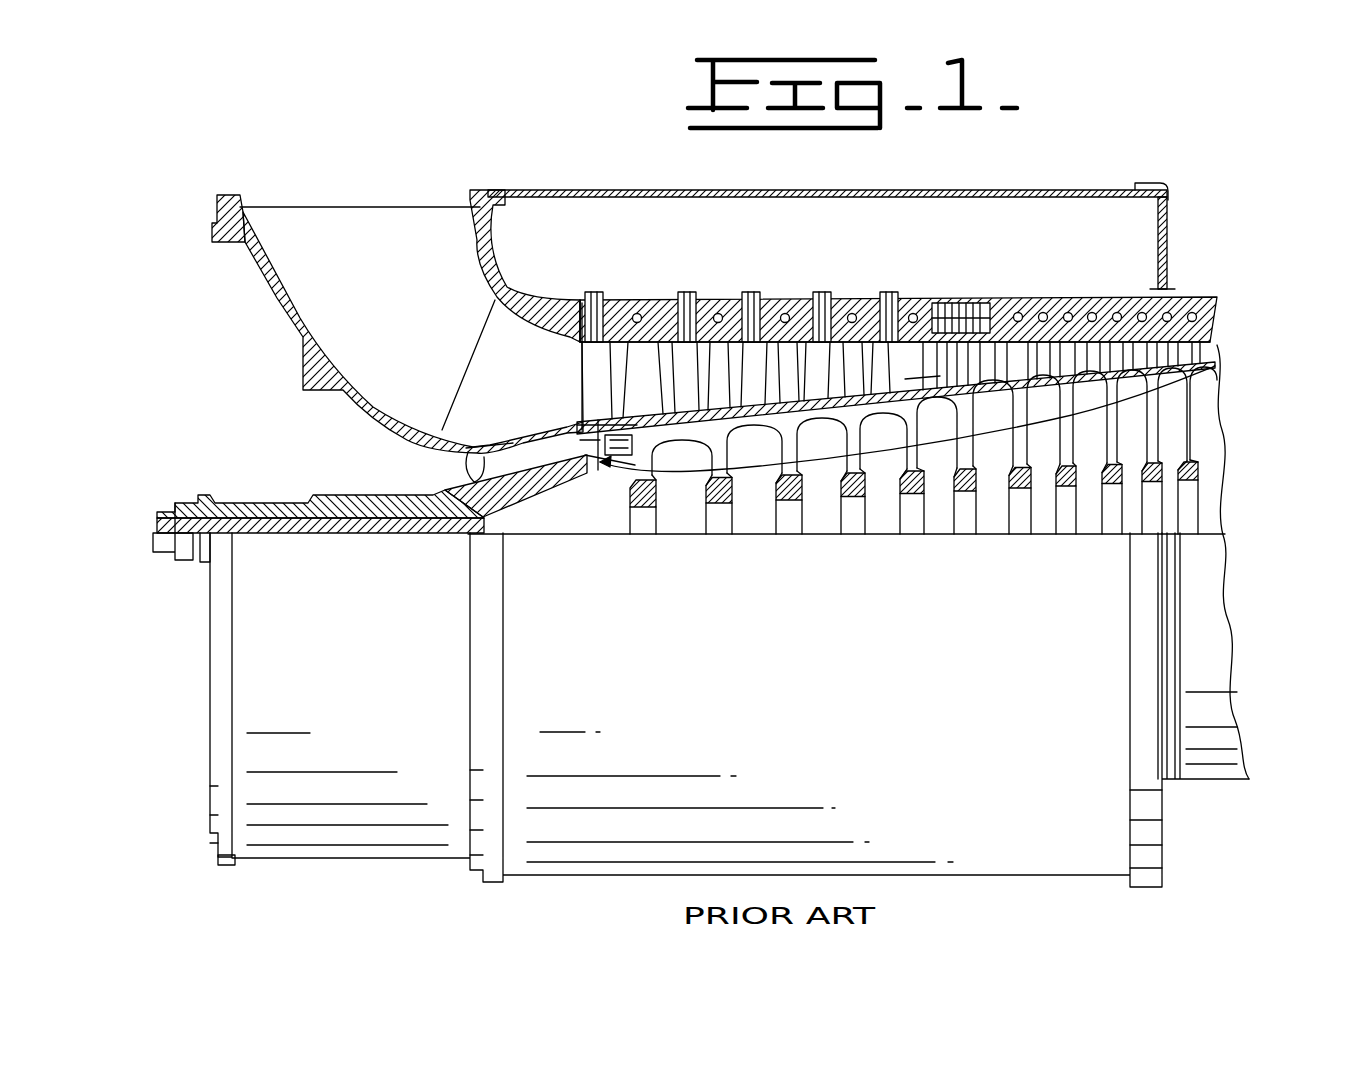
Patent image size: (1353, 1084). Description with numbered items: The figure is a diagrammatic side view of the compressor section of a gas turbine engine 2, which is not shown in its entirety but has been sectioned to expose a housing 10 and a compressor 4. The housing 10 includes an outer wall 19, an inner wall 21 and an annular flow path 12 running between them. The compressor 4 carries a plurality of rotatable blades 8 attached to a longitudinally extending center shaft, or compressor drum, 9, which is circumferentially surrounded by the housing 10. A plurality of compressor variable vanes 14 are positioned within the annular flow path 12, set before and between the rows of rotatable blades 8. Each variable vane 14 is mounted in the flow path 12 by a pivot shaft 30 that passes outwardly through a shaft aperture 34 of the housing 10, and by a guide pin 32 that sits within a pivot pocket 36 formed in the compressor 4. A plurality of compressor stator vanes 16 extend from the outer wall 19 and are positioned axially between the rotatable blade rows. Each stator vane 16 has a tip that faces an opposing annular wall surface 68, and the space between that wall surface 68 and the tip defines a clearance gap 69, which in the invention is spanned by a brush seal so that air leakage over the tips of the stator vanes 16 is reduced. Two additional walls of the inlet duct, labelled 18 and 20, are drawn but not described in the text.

The gas turbine engine 2 is at (1064, 890).
The compressor 4 is at (1066, 180).
The rotatable blades 8 is at (850, 455).
The center shaft (compressor drum) 9 is at (850, 380).
The housing 10 is at (787, 287).
The annular flow path 12 is at (387, 260).
The compressor variable vanes 14 is at (695, 355).
The compressor stator vanes 16 is at (937, 350).
The inlet casing wall 18 is at (570, 342).
The outer wall 19 is at (613, 303).
The inlet duct wall 20 is at (577, 420).
The inner wall 21 is at (513, 443).
The pivot shaft 30 is at (592, 292).
The guide pin 32 is at (598, 442).
The shaft aperture 34 is at (613, 303).
The pivot pocket 36 is at (575, 462).
The annular wall surface 68 is at (920, 378).
The clearance gap 69 is at (968, 403).